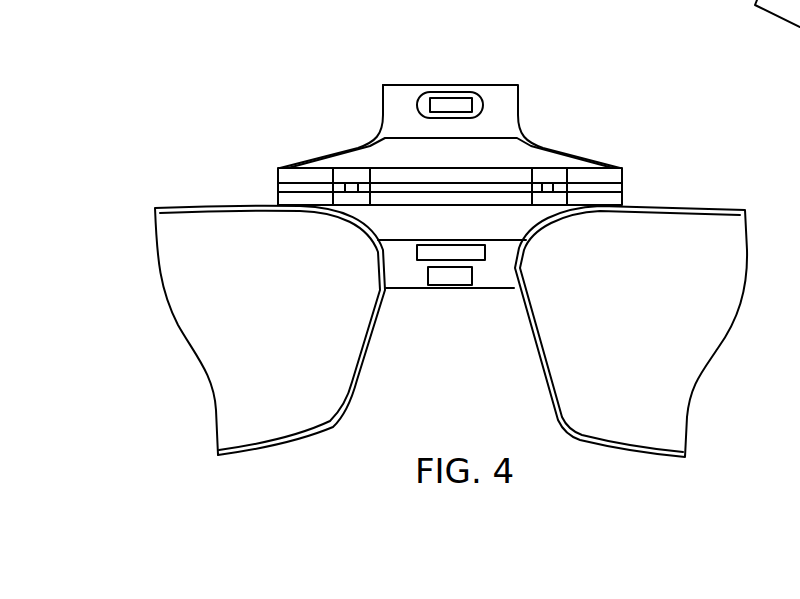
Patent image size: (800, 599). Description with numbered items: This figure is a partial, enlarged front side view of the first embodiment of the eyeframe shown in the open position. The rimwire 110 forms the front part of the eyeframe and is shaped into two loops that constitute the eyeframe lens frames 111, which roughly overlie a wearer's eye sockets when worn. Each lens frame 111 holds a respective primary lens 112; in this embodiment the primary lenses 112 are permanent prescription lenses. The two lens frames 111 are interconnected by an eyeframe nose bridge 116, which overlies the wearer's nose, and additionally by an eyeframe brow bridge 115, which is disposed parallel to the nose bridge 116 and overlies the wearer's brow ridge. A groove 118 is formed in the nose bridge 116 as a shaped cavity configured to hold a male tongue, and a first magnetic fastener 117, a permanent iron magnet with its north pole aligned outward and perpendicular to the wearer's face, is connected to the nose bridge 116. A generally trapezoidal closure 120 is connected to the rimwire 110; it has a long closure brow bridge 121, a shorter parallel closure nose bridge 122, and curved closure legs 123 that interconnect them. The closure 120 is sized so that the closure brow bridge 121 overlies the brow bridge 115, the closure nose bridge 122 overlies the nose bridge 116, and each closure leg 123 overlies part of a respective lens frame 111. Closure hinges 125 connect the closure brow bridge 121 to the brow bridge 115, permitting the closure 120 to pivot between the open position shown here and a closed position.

The rimwire 110 is at (451, 354).
The eyeframe lens frame 111 is at (368, 377).
The primary lens 112 is at (286, 333).
The eyeframe brow bridge 115 is at (452, 205).
The eyeframe nose bridge 116 is at (463, 290).
The first magnetic fastener 117 is at (426, 280).
The groove 118 is at (487, 258).
The closure 120 is at (521, 225).
The closure brow bridge 121 is at (456, 174).
The closure nose bridge 122 is at (443, 92).
The closure leg 123 is at (347, 148).
The closure hinge 125 is at (332, 187).